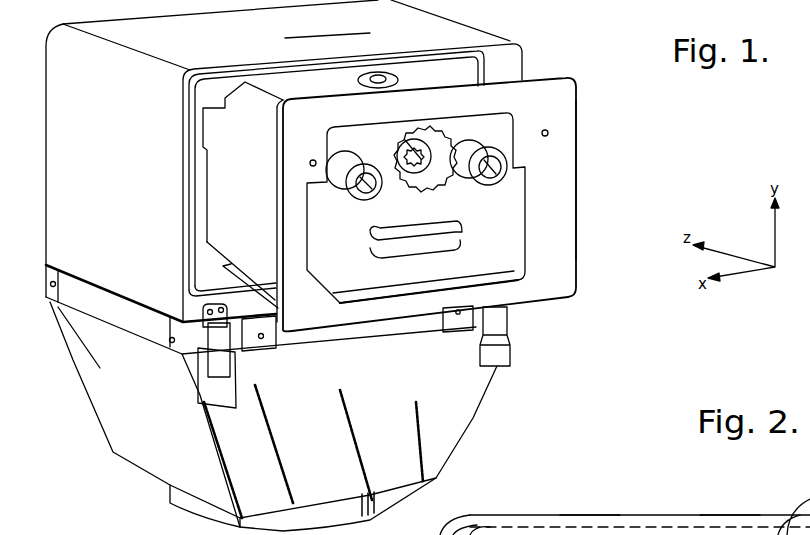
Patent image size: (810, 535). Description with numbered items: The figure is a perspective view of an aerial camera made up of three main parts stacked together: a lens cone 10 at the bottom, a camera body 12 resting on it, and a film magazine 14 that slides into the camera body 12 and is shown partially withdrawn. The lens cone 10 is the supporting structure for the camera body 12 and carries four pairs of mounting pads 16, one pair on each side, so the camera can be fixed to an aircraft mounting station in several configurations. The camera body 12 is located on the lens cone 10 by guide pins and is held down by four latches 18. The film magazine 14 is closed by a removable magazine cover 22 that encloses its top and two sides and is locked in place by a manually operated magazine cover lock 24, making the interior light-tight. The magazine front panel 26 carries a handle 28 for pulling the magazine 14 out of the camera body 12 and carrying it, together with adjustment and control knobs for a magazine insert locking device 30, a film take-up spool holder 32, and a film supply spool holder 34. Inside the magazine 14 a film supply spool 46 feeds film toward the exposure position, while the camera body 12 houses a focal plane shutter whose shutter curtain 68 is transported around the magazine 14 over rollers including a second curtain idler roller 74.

In FIG. 1, the lens cone 10 is at (473, 418).
In FIG. 1, the camera body 12 is at (509, 40).
In FIG. 2, the camera body 12 is at (667, 514).
In FIG. 1, the film magazine 14 is at (582, 240).
In FIG. 2, the film magazine 14 is at (612, 525).
In FIG. 1, the mounting pads 16 is at (158, 353).
In FIG. 1, the latches 18 is at (240, 410).
In FIG. 1, the magazine cover 22 is at (500, 78).
In FIG. 1, the magazine cover lock 24 is at (392, 72).
In FIG. 1, the magazine front panel 26 is at (576, 170).
In FIG. 1, the handle 28 is at (460, 242).
In FIG. 1, the magazine insert locking device 30 is at (451, 136).
In FIG. 1, the film take-up spool holder 32 is at (379, 194).
In FIG. 1, the film supply spool holder 34 is at (505, 190).
In FIG. 2, the film supply spool 46 is at (745, 527).
In FIG. 2, the shutter curtain 68 is at (440, 533).
In FIG. 2, the second curtain idler roller 74 is at (478, 530).